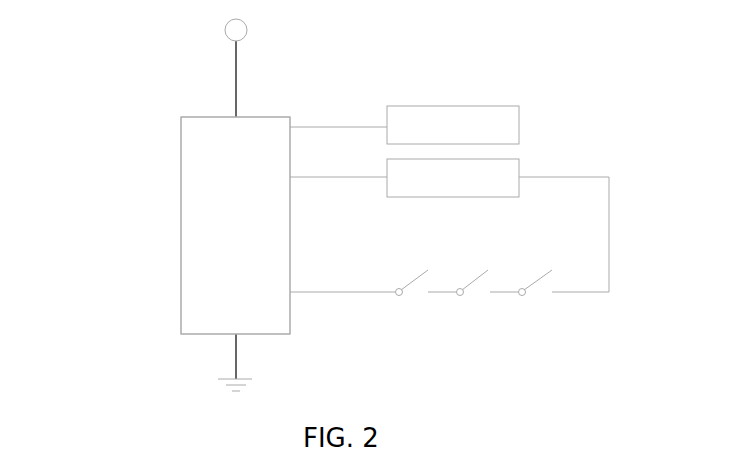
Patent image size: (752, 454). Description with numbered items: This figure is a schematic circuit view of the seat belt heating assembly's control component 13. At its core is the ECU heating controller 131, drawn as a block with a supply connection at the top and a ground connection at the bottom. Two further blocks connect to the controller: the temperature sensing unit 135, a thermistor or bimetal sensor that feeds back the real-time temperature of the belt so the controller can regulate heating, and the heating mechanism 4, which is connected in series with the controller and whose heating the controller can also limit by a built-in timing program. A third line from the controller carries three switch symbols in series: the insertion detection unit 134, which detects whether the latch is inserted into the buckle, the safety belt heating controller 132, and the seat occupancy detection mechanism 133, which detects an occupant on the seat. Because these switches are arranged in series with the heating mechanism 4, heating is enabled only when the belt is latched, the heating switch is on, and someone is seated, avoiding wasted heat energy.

The control component 13 is at (161, 284).
The ECU heating controller 131 is at (215, 233).
The temperature sensing unit 135 is at (438, 116).
The heating mechanism 4 is at (480, 177).
The insertion detection unit 134 is at (397, 296).
The safety belt heating controller 132 is at (458, 296).
The seat occupancy detection mechanism 133 is at (520, 296).